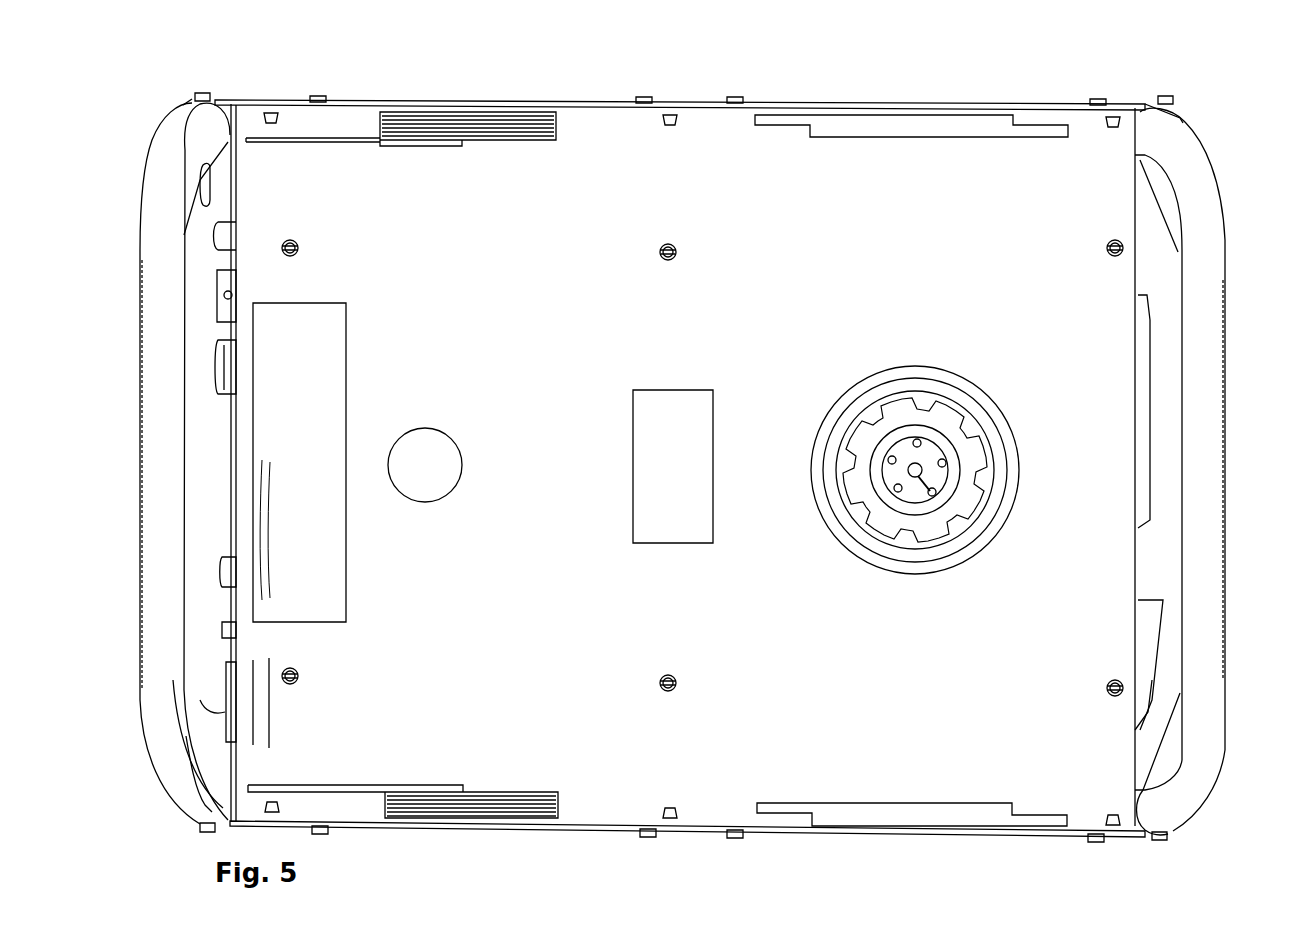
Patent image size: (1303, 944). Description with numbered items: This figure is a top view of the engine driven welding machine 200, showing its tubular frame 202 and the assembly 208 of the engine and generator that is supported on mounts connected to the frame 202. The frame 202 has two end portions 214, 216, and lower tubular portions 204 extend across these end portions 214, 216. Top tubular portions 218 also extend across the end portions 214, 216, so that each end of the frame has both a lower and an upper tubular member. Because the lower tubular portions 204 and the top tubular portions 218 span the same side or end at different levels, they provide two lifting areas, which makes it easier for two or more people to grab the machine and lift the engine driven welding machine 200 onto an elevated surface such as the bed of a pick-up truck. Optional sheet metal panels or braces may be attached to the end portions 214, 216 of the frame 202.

The engine driven welding machine 200 is at (752, 80).
The frame 202 is at (157, 128).
The lower tubular portions 204 is at (202, 732).
The assembly 208 is at (571, 160).
The end portion 214 is at (148, 503).
The end portion 216 is at (1212, 393).
The top tubular portions 218 is at (160, 423).